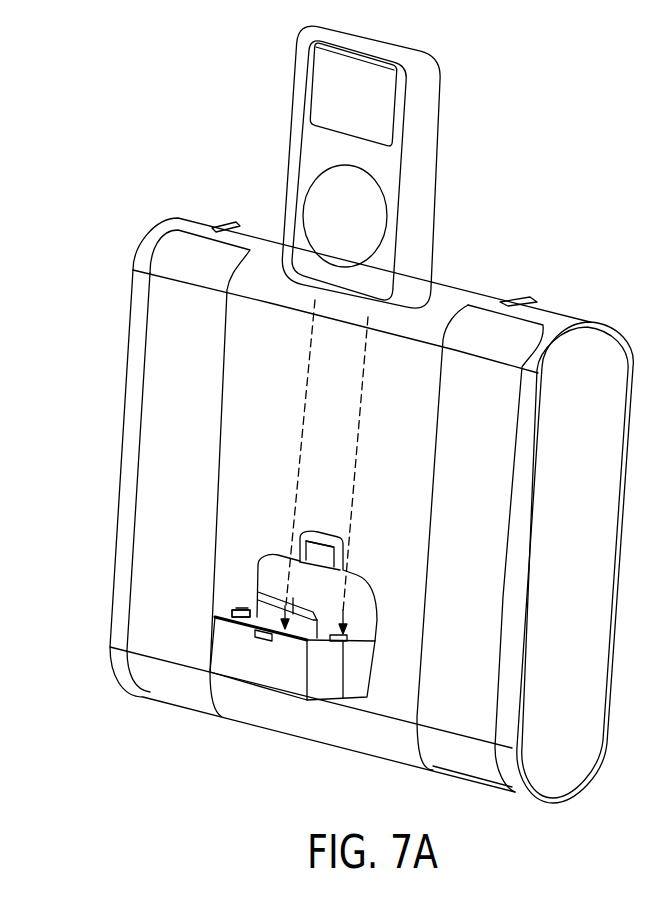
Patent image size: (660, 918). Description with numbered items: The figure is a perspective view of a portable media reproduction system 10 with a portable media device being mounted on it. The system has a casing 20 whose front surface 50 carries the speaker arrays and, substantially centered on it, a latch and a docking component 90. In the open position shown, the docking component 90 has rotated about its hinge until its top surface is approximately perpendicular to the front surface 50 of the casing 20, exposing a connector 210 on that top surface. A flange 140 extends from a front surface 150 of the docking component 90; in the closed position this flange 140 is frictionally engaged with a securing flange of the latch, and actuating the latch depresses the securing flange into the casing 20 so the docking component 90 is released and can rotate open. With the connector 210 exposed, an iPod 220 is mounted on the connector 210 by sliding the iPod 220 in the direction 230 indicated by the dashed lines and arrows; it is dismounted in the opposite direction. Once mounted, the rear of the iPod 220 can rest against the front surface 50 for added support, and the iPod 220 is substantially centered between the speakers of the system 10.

The portable media reproduction system 10 is at (89, 190).
The casing 20 is at (265, 262).
The front surface 50 is at (413, 363).
The docking component 90 is at (313, 688).
The flange 140 is at (253, 630).
The front surface of docking component 150 is at (278, 680).
The connector 210 is at (300, 627).
The iPod 220 is at (403, 198).
The direction 230 is at (300, 433).